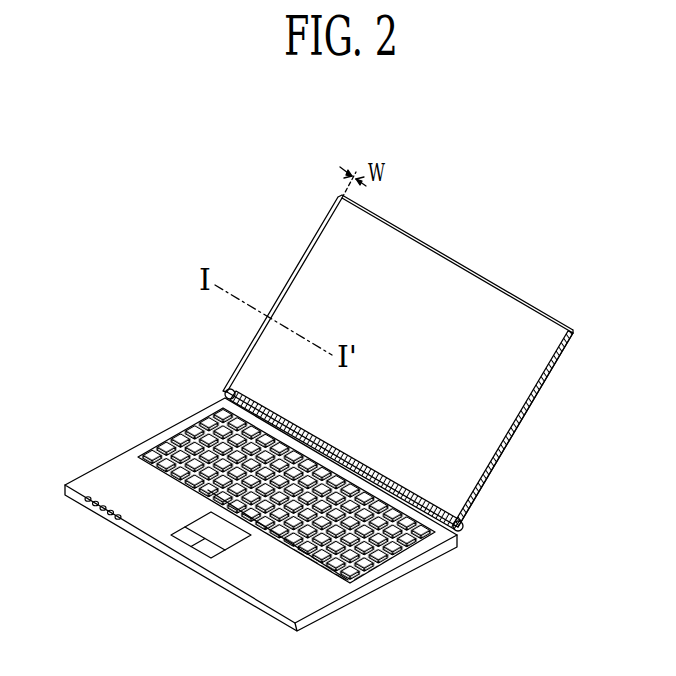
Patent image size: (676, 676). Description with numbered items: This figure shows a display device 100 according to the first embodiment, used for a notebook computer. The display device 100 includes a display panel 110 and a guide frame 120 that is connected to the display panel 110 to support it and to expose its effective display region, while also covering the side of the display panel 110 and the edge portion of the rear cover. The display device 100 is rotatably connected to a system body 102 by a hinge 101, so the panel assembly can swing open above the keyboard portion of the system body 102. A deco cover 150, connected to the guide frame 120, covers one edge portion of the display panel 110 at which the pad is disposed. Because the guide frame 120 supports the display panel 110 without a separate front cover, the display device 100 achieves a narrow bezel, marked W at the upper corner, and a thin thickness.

The display device 100 is at (290, 242).
The display panel 110 is at (495, 317).
The guide frame 120 is at (530, 425).
The deco cover 150 is at (446, 513).
The hinge 101 is at (226, 391).
The system body 102 is at (126, 437).